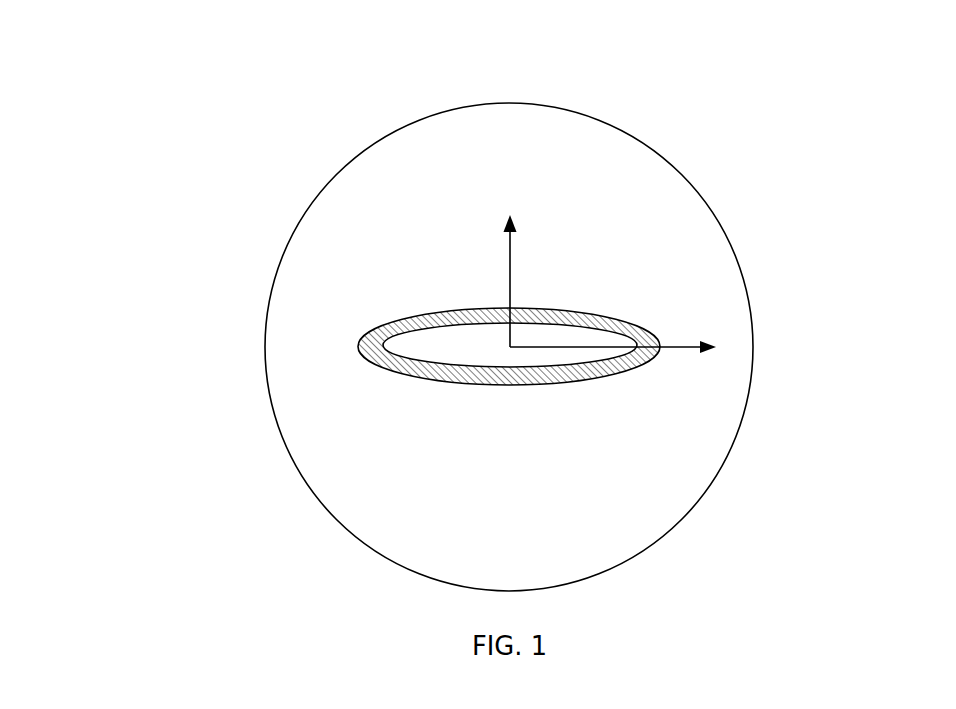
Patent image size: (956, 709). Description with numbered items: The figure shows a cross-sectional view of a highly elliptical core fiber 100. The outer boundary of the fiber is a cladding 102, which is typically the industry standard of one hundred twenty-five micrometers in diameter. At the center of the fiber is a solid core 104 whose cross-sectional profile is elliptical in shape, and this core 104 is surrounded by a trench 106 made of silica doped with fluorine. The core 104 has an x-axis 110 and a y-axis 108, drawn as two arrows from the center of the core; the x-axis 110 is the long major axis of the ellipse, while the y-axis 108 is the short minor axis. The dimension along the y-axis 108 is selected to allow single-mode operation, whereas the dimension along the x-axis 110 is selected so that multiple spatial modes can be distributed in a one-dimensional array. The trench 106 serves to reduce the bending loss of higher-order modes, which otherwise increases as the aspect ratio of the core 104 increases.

The highly elliptical core fiber 100 is at (78, 38).
The cladding 102 is at (509, 347).
The core 104 is at (510, 345).
The trench 106 is at (423, 317).
The y-axis 108 is at (508, 257).
The x-axis 110 is at (687, 357).